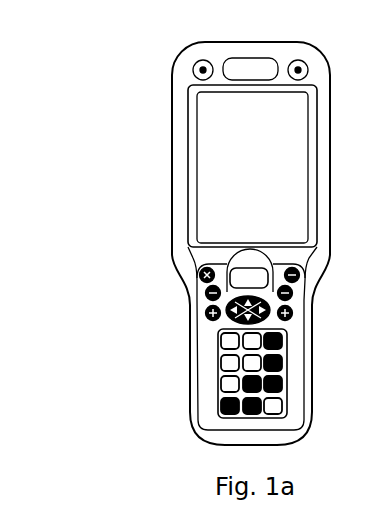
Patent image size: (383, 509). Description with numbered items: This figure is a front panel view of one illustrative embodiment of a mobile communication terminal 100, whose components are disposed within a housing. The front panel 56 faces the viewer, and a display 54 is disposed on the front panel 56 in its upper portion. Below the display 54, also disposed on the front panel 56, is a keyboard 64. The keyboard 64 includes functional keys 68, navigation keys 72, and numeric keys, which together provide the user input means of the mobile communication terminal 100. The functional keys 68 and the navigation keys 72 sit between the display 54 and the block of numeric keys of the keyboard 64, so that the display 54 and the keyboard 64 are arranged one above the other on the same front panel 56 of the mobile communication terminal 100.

The mobile communication terminal 100 is at (218, 227).
The front panel 56 is at (179, 113).
The display 54 is at (238, 169).
The functional keys 68 is at (228, 268).
The navigation keys 72 is at (207, 308).
The keyboard 64 is at (199, 377).